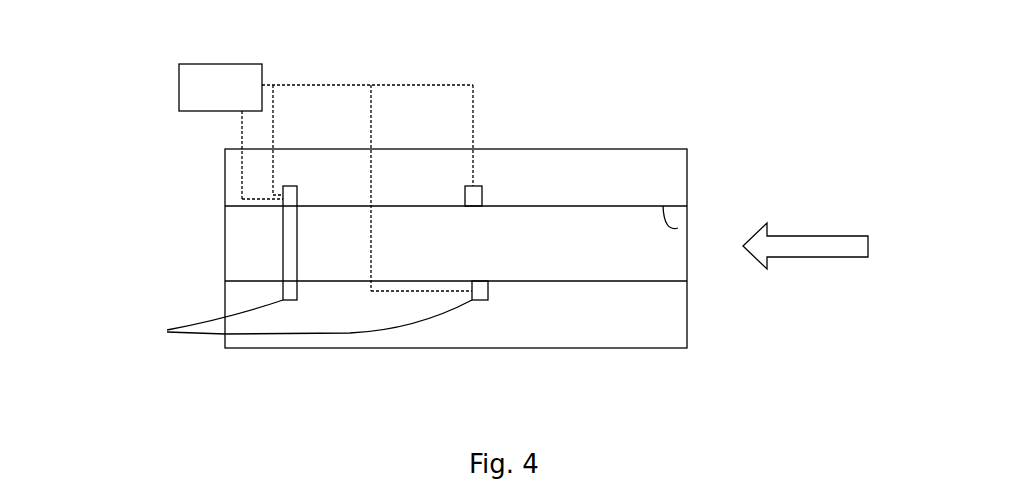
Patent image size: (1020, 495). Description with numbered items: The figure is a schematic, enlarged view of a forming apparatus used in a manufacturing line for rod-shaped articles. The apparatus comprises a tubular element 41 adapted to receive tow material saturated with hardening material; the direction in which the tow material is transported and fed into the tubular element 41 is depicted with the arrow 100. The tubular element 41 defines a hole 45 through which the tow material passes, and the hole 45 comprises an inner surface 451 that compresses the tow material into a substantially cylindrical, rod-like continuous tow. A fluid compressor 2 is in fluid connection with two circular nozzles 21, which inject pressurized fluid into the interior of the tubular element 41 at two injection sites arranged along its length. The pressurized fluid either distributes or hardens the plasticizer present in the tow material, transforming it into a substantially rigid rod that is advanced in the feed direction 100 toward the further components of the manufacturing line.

The fluid compressor 2 is at (219, 103).
The circular nozzles 21 is at (303, 264).
The tubular element 41 is at (170, 204).
The hole 45 is at (592, 268).
The inner surface 451 is at (678, 228).
The arrow 100 is at (837, 242).